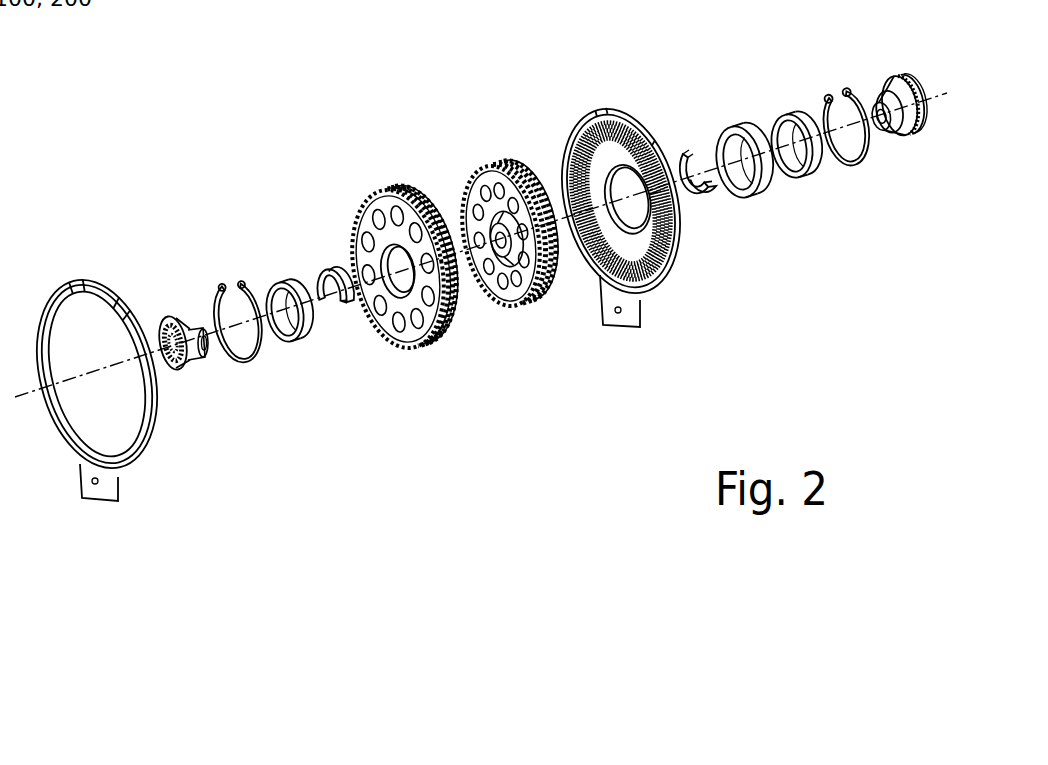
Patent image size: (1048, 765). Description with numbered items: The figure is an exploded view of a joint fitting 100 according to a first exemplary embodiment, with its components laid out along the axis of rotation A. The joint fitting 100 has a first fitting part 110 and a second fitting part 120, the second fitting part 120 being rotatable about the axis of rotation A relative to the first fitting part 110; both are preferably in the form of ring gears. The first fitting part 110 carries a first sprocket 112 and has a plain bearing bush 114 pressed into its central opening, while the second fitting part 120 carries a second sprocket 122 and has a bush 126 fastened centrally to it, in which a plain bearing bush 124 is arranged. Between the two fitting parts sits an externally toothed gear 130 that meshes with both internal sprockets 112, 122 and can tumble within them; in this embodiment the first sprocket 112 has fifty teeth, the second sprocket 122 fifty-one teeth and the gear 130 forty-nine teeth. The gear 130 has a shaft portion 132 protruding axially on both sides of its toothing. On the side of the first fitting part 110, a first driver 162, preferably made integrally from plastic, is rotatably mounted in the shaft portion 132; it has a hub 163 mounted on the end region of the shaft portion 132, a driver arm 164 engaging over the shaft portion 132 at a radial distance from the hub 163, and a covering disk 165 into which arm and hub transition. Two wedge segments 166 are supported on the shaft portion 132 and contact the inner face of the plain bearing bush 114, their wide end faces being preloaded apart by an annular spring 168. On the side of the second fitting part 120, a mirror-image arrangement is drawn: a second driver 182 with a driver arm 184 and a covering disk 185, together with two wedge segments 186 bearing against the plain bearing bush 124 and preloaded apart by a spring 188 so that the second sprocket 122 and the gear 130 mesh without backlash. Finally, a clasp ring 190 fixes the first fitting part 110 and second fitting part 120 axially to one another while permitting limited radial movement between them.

The joint fitting 100 is at (141, 195).
The first fitting part 110 is at (430, 352).
The first sprocket 112 is at (457, 340).
The plain bearing bush 114 is at (296, 340).
The second fitting part 120 is at (672, 277).
The second sprocket 122 is at (634, 288).
The plain bearing bush 124 is at (790, 117).
The bush 126 is at (735, 128).
The gear 130 is at (540, 306).
The shaft portion 132 is at (478, 198).
The first driver 162 is at (192, 362).
The hub 163 is at (170, 370).
The driver arm 164 is at (206, 358).
The covering disk 165 is at (176, 316).
The wedge segments 166 is at (325, 275).
The spring 168 is at (252, 362).
The second driver 182 is at (922, 112).
The driver arm 184 is at (887, 143).
The covering disk 185 is at (900, 79).
The wedge segments 186 is at (683, 150).
The spring 188 is at (832, 92).
The clasp ring 190 is at (84, 498).
The axis of rotation A is at (938, 88).